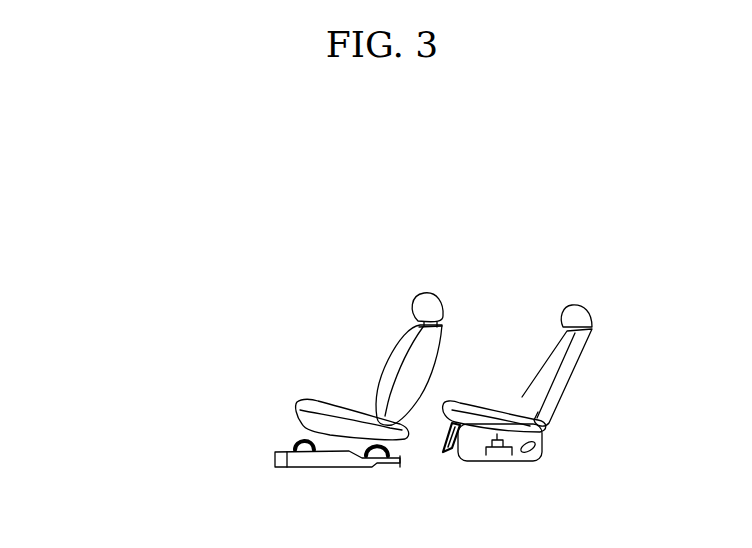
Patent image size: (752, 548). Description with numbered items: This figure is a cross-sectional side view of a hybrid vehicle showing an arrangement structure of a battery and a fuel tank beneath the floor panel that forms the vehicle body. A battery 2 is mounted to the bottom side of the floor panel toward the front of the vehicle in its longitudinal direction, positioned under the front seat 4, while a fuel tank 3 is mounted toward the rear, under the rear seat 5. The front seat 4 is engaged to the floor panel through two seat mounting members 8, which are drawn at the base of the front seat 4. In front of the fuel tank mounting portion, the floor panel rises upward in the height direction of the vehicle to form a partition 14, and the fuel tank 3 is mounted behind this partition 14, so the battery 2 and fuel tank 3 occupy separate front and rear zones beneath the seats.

The battery 2 is at (313, 460).
The fuel tank 3 is at (500, 460).
The front seat 4 is at (348, 418).
The rear seat 5 is at (532, 462).
The seat mounting member 8 is at (290, 439).
The partition 14 is at (448, 452).